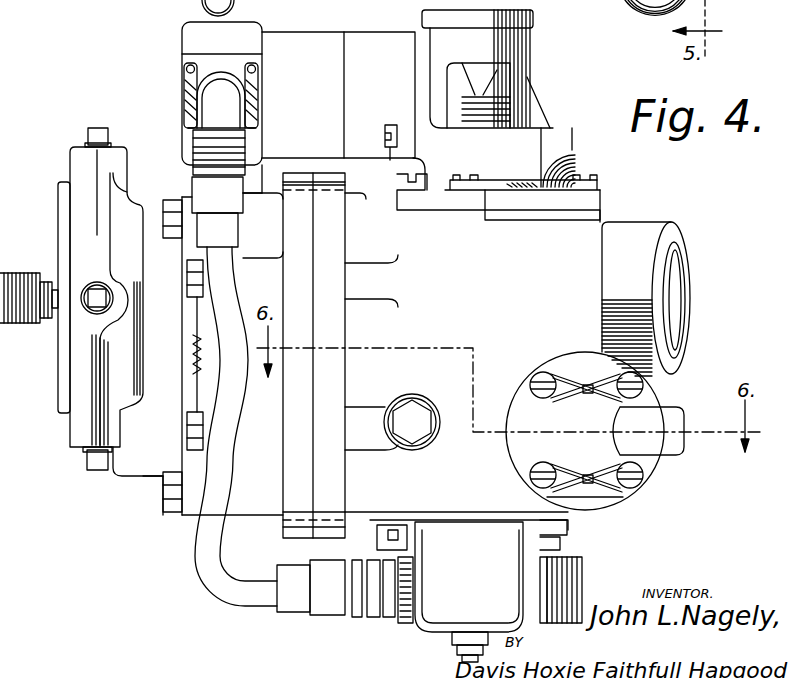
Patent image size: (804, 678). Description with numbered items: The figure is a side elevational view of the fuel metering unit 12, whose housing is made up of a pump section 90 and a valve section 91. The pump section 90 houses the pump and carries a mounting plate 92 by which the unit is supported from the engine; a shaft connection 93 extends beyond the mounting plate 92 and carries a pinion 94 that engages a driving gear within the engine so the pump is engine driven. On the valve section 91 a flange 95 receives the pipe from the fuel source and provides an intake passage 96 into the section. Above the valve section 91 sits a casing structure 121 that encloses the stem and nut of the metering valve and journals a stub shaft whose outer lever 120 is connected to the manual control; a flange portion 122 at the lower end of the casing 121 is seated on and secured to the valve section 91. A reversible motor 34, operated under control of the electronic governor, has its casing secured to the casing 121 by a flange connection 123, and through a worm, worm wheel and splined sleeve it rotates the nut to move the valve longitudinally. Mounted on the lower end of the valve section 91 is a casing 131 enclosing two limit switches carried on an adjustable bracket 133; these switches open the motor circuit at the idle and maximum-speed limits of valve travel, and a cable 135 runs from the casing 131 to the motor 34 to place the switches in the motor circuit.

The unit 12 is at (125, 478).
The reversible motor 34 is at (307, 43).
The pump section 90 is at (190, 483).
The valve section 91 is at (607, 230).
The mounting plate 92 is at (82, 427).
The shaft connection 93 is at (53, 320).
The pinion 94 is at (20, 278).
The flange 95 is at (650, 227).
The intake passage 96 is at (665, 290).
The lever 120 is at (540, 108).
The casing structure 121 is at (527, 85).
The flange portion 122 is at (590, 200).
The flange connection 123 is at (395, 105).
The casing 131 is at (443, 607).
The adjustable bracket 133 is at (160, 0).
The cable 135 is at (205, 550).